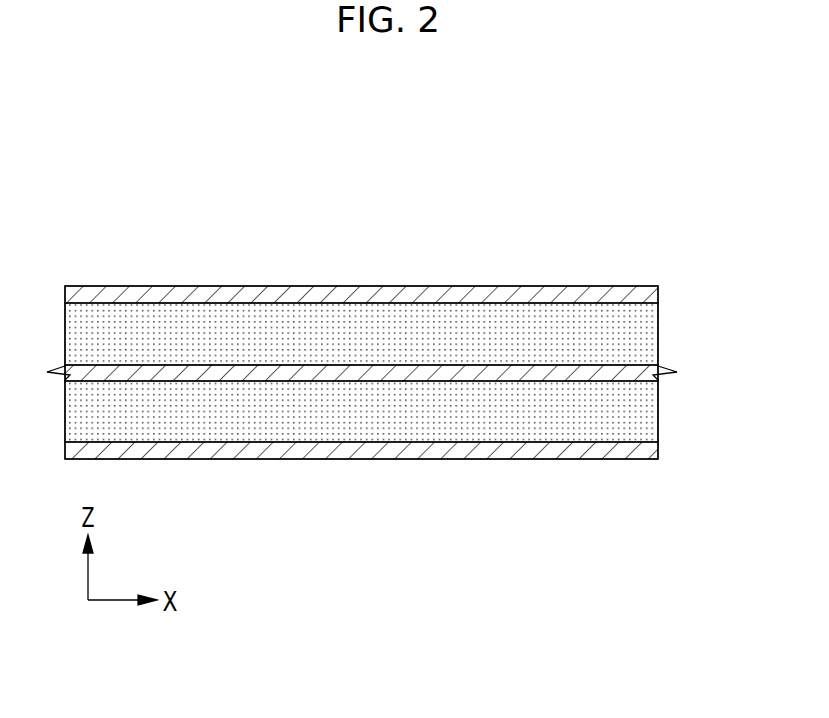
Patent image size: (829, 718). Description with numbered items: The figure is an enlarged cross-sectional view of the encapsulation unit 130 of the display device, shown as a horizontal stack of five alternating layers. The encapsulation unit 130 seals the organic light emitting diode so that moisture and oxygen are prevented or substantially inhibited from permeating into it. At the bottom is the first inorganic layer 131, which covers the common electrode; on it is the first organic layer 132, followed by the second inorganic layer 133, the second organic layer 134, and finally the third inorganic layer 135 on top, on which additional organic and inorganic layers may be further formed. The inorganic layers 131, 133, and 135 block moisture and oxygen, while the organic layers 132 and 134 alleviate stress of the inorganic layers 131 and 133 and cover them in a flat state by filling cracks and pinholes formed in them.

The encapsulation unit 130 is at (410, 223).
The first inorganic layer 131 is at (658, 453).
The first organic layer 132 is at (658, 414).
The second inorganic layer 133 is at (670, 369).
The second organic layer 134 is at (658, 331).
The third inorganic layer 135 is at (658, 296).